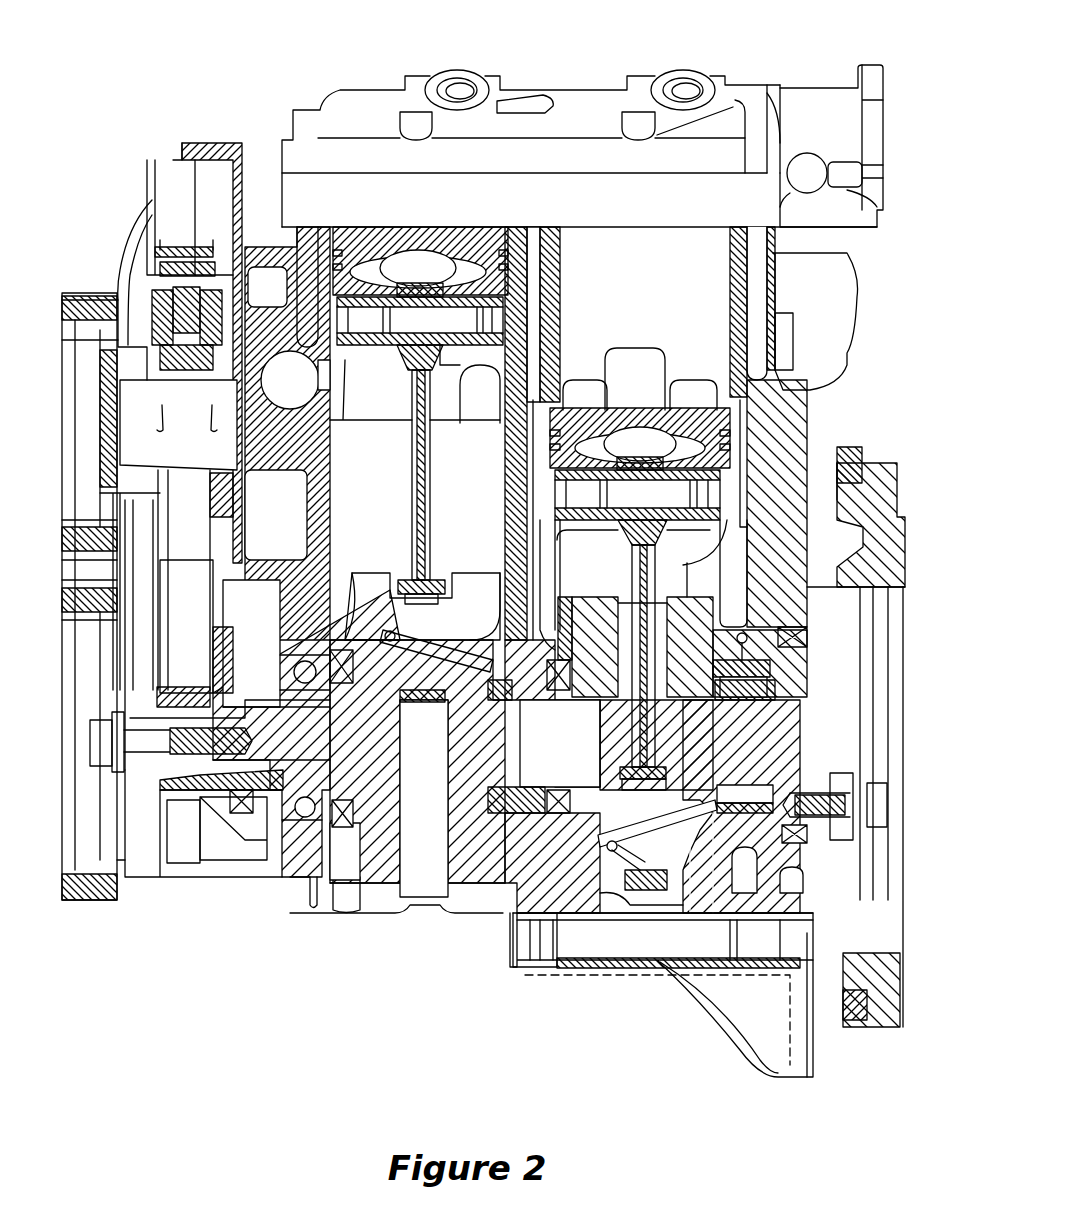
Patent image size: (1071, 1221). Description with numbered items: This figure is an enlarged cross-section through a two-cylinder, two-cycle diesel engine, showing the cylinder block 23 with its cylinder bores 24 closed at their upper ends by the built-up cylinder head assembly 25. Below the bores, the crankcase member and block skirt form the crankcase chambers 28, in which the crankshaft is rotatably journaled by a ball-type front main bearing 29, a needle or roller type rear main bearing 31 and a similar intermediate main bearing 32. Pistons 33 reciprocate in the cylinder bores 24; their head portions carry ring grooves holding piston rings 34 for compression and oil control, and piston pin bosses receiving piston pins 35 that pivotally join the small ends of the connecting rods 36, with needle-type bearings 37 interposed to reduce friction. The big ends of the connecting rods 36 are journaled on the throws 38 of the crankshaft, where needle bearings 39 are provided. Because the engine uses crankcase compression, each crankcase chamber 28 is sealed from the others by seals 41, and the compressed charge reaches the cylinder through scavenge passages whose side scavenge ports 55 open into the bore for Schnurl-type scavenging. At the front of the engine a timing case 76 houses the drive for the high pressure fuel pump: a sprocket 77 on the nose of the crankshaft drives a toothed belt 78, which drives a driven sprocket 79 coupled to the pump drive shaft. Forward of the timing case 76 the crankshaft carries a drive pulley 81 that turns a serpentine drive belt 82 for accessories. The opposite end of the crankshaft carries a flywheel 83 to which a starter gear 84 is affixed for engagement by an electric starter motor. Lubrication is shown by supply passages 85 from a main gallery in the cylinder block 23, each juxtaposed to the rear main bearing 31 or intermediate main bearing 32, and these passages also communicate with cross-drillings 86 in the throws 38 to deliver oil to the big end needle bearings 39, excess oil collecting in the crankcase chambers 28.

The cylinder block 23 is at (266, 253).
The cylinder bores 24 is at (727, 296).
The cylinder head assembly 25 is at (588, 106).
The crankcase chambers 28 is at (745, 540).
The front main bearing 29 is at (283, 870).
The rear main bearing 31 is at (733, 905).
The intermediate main bearing 32 is at (512, 907).
The pistons 33 is at (357, 240).
The piston rings 34 is at (508, 263).
The piston pins 35 is at (458, 300).
The connecting rods 36 is at (422, 517).
The needle-type bearings 37 is at (402, 370).
The throws 38 is at (668, 470).
The needle bearings 39 is at (445, 580).
The seals 41 is at (557, 690).
The side scavenge ports 55 is at (580, 370).
The timing case 76 is at (203, 138).
The sprocket 77 is at (187, 790).
The toothed belt 78 is at (176, 250).
The driven sprocket 79 is at (172, 263).
The drive pulley 81 is at (127, 862).
The serpentine drive belt 82 is at (97, 903).
The flywheel 83 is at (880, 1010).
The starter gear 84 is at (850, 1027).
The supply passages 85 is at (818, 595).
The cross-drillings 86 is at (412, 652).